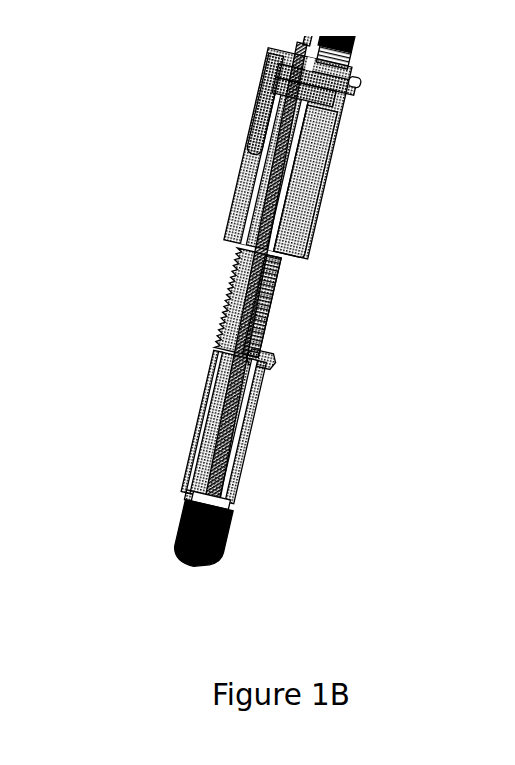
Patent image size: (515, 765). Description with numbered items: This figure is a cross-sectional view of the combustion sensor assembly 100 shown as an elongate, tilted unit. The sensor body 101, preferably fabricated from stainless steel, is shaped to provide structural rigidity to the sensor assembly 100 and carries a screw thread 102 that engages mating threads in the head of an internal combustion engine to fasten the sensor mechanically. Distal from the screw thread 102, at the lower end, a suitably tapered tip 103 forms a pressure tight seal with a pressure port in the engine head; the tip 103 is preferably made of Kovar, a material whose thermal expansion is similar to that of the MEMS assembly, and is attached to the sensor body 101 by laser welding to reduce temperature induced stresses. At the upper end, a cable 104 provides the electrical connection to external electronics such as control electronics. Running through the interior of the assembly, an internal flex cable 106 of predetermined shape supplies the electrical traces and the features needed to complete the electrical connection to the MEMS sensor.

The sensor assembly 100 is at (258, 305).
The sensor body 101 is at (330, 208).
The screw thread 102 is at (280, 362).
The tip 103 is at (243, 552).
The cable 104 is at (366, 51).
The internal flex cable 106 is at (218, 403).